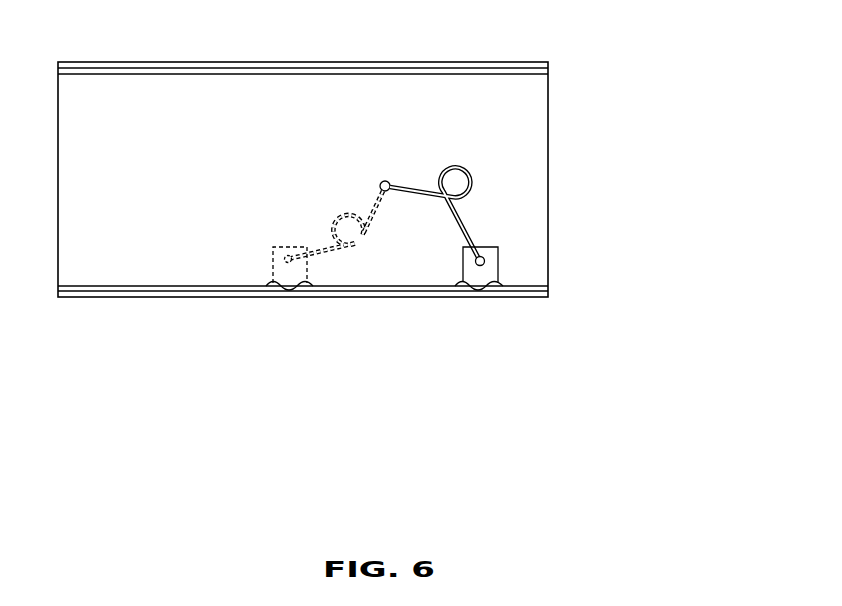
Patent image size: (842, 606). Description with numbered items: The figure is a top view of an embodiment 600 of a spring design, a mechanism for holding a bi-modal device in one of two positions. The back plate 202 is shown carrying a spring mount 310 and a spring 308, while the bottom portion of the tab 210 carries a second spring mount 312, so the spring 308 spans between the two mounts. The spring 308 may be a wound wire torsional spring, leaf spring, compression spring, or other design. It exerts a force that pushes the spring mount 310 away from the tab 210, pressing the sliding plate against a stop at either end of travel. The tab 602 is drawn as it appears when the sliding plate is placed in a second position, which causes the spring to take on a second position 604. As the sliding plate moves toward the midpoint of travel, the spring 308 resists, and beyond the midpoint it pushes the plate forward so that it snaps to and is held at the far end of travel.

The back plate 202 is at (612, 216).
The spring 308 is at (472, 181).
The spring mount 310 is at (385, 181).
The spring mount 312 is at (481, 266).
The tab 210 is at (498, 254).
The embodiment of a spring design 600 is at (547, 409).
The tab in second position 602 is at (273, 250).
The spring in second position 604 is at (358, 262).